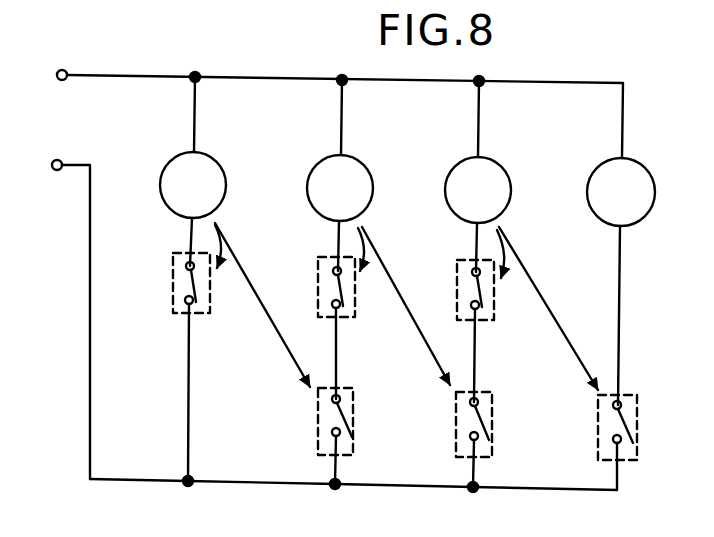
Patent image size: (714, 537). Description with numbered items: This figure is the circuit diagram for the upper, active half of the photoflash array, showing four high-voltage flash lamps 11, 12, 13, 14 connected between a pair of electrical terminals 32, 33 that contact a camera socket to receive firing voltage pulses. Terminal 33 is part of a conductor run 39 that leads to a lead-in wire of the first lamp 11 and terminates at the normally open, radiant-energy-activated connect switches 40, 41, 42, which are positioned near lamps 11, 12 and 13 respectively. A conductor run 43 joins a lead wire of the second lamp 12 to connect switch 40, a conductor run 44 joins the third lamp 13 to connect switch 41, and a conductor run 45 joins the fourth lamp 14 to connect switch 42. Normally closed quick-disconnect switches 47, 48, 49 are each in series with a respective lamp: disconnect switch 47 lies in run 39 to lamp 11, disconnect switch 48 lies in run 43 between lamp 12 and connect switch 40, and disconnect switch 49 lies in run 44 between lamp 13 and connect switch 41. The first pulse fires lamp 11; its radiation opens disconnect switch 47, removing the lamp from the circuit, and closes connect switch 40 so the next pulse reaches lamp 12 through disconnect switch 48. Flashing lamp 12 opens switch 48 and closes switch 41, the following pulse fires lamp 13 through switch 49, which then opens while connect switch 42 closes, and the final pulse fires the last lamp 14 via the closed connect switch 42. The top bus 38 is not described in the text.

The flash lamp 11 is at (211, 163).
The flash lamp 12 is at (358, 170).
The flash lamp 13 is at (488, 172).
The flash lamp 14 is at (633, 176).
The terminal 32 is at (76, 52).
The terminal 33 is at (60, 319).
The supply conductor 38 is at (281, 76).
The conductor run 39 is at (146, 480).
The connect switch 40 is at (343, 455).
The connect switch 41 is at (480, 457).
The connect switch 42 is at (625, 460).
The conductor run 43 is at (335, 238).
The conductor run 44 is at (475, 366).
The conductor run 45 is at (618, 372).
The disconnect switch 47 is at (172, 298).
The disconnect switch 48 is at (353, 316).
The disconnect switch 49 is at (494, 318).